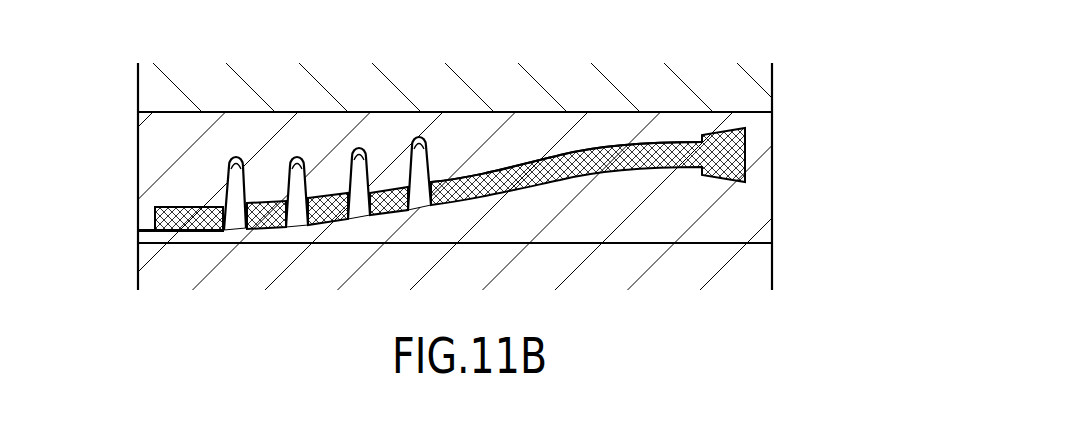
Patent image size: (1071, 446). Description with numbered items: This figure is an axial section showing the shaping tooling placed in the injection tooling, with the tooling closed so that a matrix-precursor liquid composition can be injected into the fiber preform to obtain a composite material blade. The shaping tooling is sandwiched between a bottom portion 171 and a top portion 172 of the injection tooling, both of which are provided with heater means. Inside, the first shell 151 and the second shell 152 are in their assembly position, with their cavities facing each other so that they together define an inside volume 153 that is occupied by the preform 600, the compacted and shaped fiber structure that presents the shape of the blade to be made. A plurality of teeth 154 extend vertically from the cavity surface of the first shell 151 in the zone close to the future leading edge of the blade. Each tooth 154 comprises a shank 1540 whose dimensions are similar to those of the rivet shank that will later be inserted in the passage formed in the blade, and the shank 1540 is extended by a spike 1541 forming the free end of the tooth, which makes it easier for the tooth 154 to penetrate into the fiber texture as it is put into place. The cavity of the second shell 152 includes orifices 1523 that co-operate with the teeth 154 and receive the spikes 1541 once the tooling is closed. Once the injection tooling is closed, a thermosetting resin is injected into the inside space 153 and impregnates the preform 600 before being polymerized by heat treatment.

The top portion 172 is at (139, 91).
The second shell 152 is at (140, 179).
The bottom portion 171 is at (140, 254).
The first shell 151 is at (763, 220).
The inside volume 153 is at (574, 172).
The preform 600 is at (580, 145).
The orifices 1523 is at (425, 140).
The shank 1540 is at (432, 151).
The spike 1541 is at (418, 132).
The teeth 154 is at (418, 200).